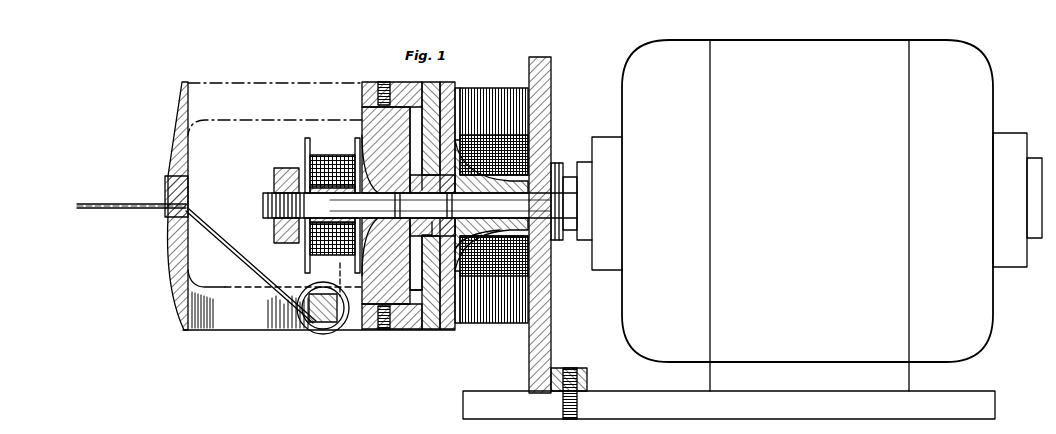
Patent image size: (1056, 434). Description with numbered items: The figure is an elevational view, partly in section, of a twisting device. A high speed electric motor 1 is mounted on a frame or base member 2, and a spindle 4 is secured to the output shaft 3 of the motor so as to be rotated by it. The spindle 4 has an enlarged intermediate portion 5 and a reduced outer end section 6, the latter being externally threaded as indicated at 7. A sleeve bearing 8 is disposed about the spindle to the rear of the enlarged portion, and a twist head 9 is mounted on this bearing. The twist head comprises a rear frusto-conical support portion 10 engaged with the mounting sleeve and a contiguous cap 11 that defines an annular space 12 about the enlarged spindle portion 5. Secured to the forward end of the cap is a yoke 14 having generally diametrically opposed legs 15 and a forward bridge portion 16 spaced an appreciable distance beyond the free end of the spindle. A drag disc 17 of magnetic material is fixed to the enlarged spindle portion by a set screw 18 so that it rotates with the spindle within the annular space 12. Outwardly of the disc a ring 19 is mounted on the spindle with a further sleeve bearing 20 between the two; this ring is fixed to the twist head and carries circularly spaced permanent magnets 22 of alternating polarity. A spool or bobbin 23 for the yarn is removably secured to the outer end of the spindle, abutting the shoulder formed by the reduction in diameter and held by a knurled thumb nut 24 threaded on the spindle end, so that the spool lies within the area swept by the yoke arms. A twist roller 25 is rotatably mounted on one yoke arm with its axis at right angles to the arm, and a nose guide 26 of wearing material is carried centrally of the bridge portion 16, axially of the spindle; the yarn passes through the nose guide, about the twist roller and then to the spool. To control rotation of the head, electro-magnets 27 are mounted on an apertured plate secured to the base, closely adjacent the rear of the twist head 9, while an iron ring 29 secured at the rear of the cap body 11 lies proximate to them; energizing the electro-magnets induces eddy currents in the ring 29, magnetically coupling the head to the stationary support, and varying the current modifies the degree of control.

The electric motor 1 is at (988, 329).
The base member 2 is at (965, 391).
The output shaft 3 is at (560, 241).
The spindle 4 is at (549, 250).
The enlarged intermediate portion 5 is at (423, 330).
The reduced outer end section 6 is at (265, 205).
The external threads 7 is at (263, 190).
The sleeve bearing 8 is at (535, 178).
The twist head 9 is at (352, 326).
The frusto-conical support portion 10 is at (478, 322).
The cap 11 is at (440, 330).
The annular space 12 is at (428, 86).
The yoke 14 is at (377, 82).
The legs 15 is at (245, 331).
The bridge portion 16 is at (171, 276).
The drag disc 17 is at (458, 96).
The set screw 18 is at (494, 124).
The ring 19 is at (404, 330).
The sleeve bearing 20 is at (363, 140).
The permanent magnets 22 is at (350, 300).
The spool 23 is at (305, 152).
The knurled thumb nut 24 is at (292, 244).
The twist roller 25 is at (312, 328).
The nose guide 26 is at (163, 184).
The electro-magnets 27 is at (522, 328).
The iron ring 29 is at (460, 325).